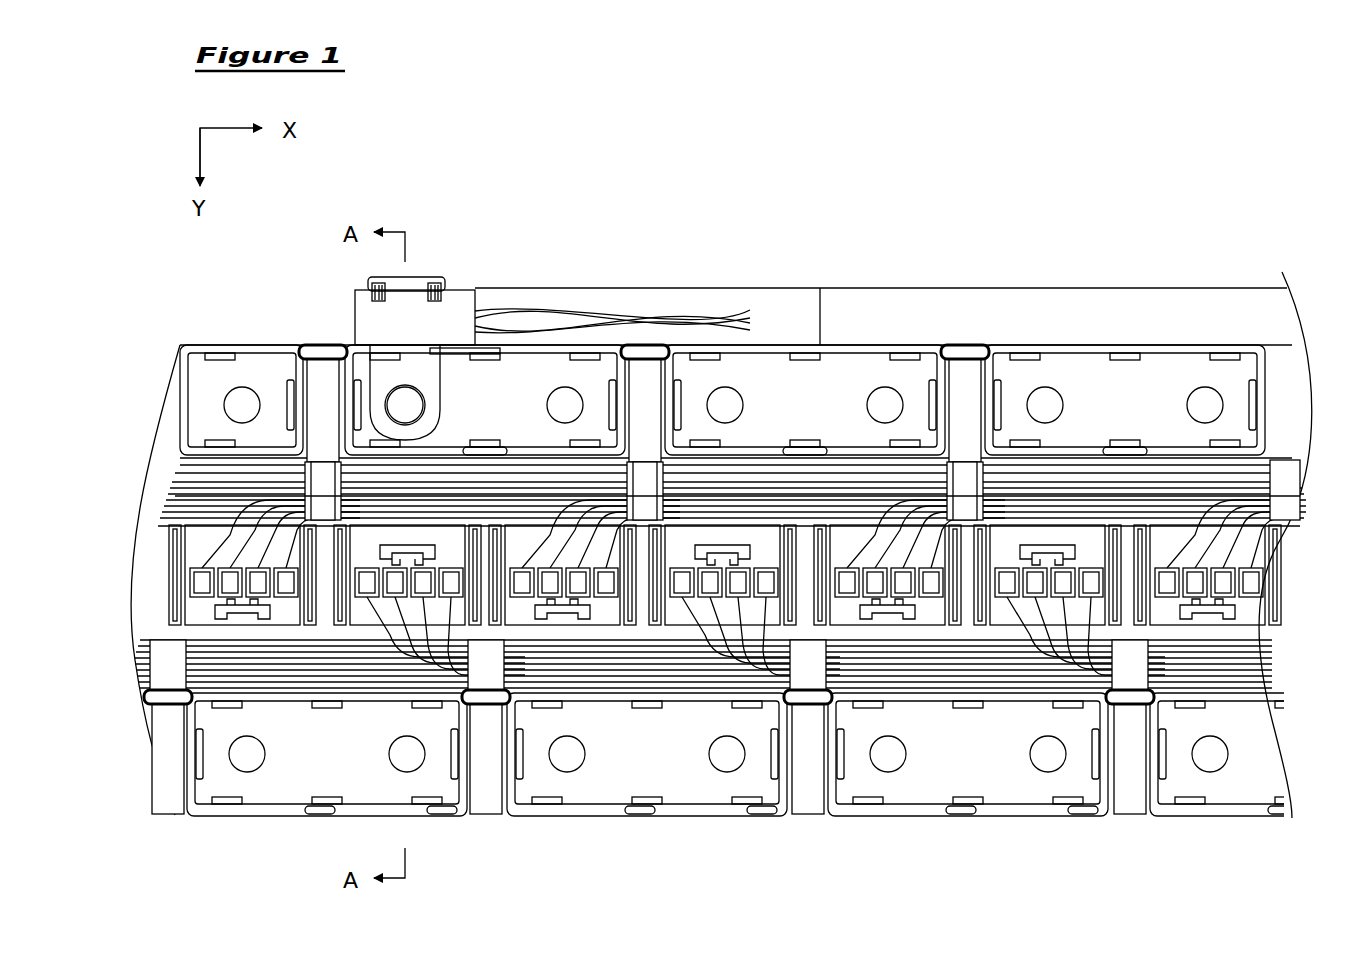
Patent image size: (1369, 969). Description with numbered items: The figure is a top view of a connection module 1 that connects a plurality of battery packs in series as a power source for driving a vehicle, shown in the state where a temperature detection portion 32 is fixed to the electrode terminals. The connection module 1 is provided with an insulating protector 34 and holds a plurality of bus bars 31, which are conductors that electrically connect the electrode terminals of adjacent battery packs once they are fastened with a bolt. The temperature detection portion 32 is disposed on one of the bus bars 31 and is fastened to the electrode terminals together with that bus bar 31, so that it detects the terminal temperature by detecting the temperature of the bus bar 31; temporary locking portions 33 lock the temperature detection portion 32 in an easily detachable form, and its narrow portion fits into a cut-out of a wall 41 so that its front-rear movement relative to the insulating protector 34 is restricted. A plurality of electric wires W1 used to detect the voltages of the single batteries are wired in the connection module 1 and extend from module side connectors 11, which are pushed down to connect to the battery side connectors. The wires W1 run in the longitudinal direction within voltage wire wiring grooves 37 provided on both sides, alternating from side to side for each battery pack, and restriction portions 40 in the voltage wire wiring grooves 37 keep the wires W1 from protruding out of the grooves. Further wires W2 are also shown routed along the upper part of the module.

The connection module 1 is at (854, 220).
The module side connector 11 is at (183, 580).
The bus bar 31 is at (228, 382).
The temperature detection portion 32 is at (405, 318).
The temporary locking portion 33 is at (372, 285).
The insulating protector 34 is at (1068, 287).
The voltage wire wiring groove 37 is at (1302, 506).
The restriction portion 40 is at (318, 470).
The wall 41 is at (470, 352).
The electric wire W1 is at (782, 482).
The electric wire W2 is at (647, 333).